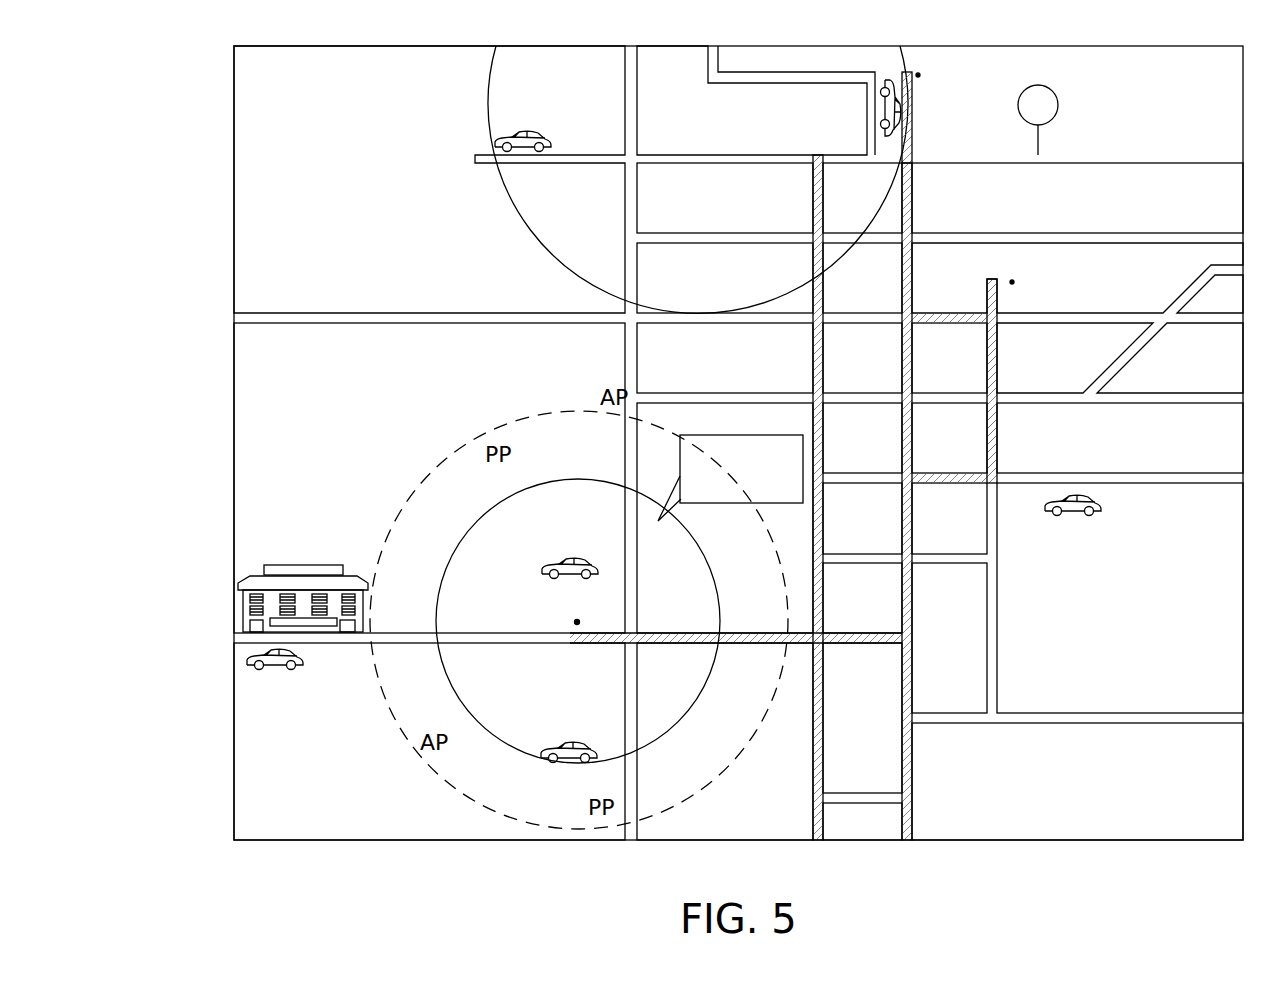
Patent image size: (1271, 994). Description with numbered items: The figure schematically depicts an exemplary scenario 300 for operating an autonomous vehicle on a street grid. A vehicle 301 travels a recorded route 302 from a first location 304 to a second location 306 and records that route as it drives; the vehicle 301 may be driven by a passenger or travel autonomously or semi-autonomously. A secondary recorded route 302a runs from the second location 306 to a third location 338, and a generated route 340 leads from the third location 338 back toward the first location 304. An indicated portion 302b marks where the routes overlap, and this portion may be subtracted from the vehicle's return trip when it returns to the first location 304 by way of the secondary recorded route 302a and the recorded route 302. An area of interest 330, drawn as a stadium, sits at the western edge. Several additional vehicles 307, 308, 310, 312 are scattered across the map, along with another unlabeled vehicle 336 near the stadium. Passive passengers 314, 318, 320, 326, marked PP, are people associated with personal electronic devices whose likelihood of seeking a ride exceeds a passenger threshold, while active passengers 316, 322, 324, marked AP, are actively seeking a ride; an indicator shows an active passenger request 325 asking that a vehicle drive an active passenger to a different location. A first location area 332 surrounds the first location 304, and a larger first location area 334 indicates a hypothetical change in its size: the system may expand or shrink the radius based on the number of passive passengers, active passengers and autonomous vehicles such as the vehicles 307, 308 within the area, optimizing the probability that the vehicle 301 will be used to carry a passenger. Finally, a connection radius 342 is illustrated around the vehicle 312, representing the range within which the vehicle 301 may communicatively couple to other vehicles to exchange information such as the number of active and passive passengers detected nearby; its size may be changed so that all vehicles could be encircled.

The scenario 300 is at (82, 128).
The vehicle 301 is at (880, 108).
The recorded route 302 is at (812, 378).
The secondary recorded route 302a is at (909, 222).
The indicated portion 302b is at (908, 150).
The first location 304 is at (576, 621).
The second location 306 is at (920, 76).
The vehicle 307 is at (562, 556).
The vehicle 308 is at (565, 767).
The vehicle 310 is at (1102, 504).
The vehicle 312 is at (520, 131).
The passive passenger 314 is at (419, 284).
The active passenger 316 is at (1080, 295).
The passive passenger 318 is at (484, 666).
The passive passenger 320 is at (596, 482).
The active passenger 322 is at (667, 664).
The active passenger 324 is at (652, 558).
The active passenger request 325 is at (803, 458).
The passive passenger 326 is at (598, 670).
The area of interest 330 is at (300, 563).
The first location area 332 is at (650, 750).
The first location area 334 is at (729, 765).
The vehicle 336 is at (280, 670).
The third location 338 is at (1014, 282).
The generated route 340 is at (996, 373).
The connection radius 342 is at (492, 86).